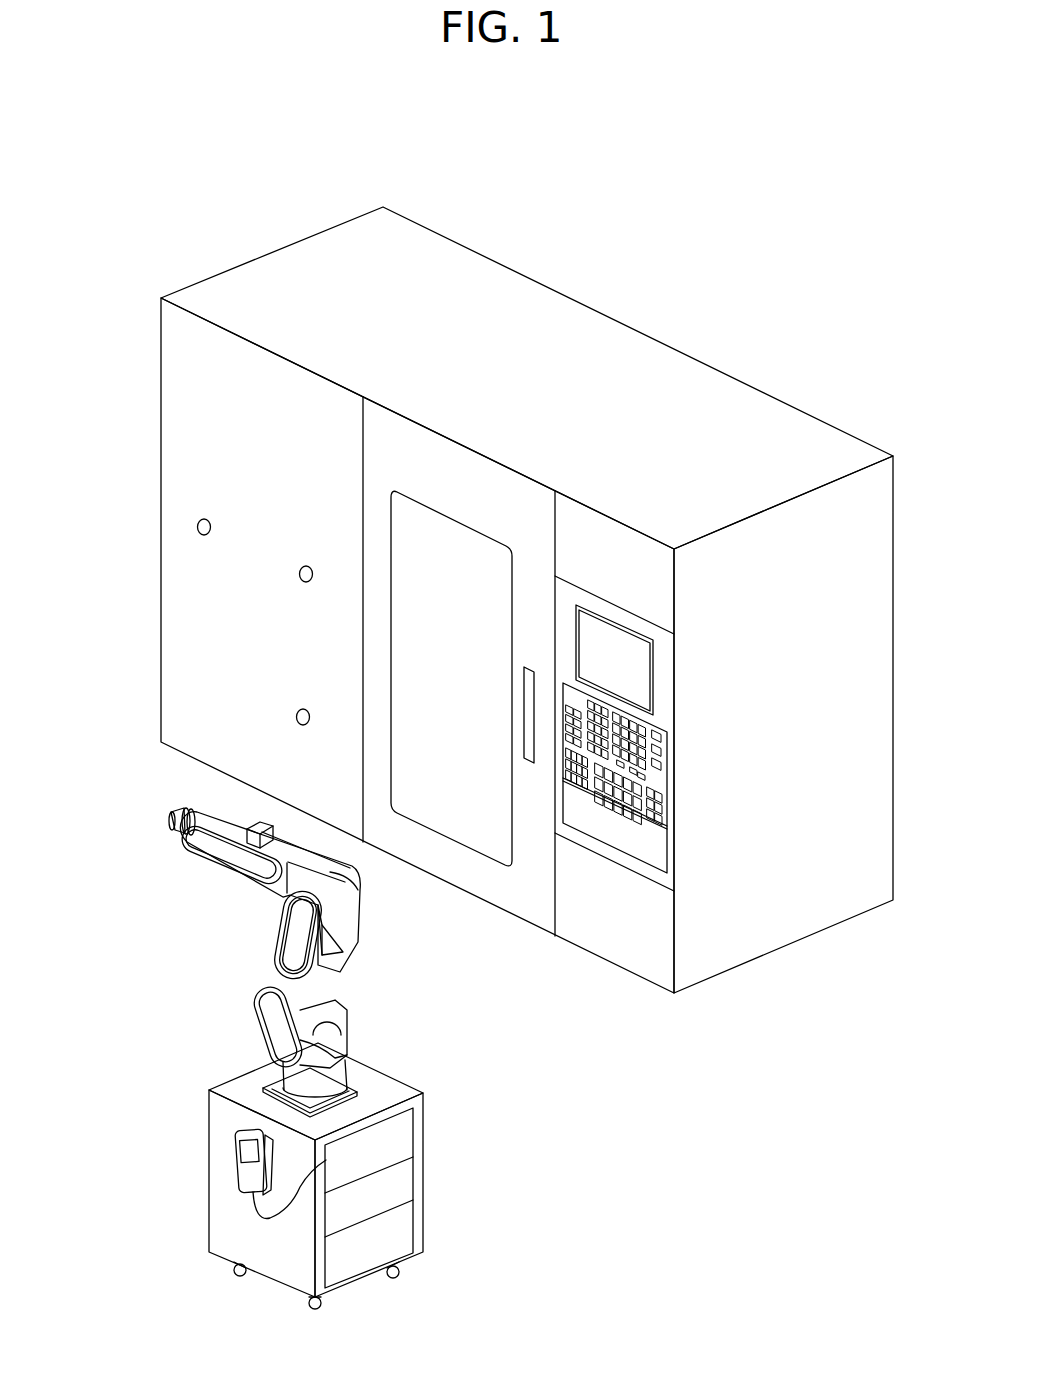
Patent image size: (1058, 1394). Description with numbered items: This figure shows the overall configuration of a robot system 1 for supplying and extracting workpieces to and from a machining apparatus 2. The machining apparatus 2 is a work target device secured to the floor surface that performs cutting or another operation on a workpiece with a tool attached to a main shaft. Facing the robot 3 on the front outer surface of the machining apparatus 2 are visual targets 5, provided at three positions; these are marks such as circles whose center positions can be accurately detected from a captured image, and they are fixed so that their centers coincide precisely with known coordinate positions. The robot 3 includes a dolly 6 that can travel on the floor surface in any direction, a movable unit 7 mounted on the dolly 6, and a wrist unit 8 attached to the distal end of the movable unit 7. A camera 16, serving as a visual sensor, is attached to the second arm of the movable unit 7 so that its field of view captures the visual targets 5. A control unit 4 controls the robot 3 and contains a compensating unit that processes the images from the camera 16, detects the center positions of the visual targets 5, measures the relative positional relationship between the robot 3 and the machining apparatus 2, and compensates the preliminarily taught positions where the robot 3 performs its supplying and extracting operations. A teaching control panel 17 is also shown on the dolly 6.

The robot system 1 is at (90, 188).
The machining apparatus 2 is at (713, 390).
The robot 3 is at (157, 1057).
The control unit 4 is at (408, 1243).
The visual targets 5 is at (197, 528).
The dolly 6 is at (225, 1226).
The movable unit 7 is at (393, 949).
The wrist unit 8 is at (145, 795).
The camera 16 is at (258, 822).
The teaching control panel 17 is at (248, 1175).